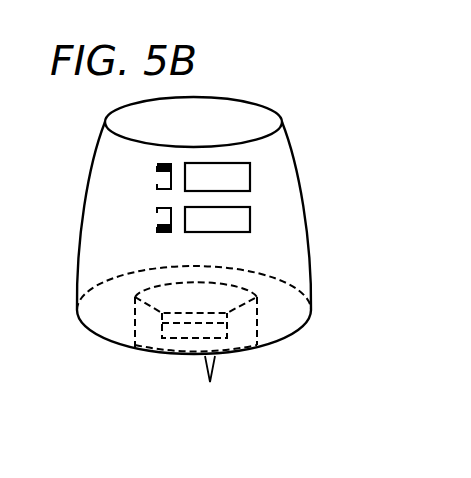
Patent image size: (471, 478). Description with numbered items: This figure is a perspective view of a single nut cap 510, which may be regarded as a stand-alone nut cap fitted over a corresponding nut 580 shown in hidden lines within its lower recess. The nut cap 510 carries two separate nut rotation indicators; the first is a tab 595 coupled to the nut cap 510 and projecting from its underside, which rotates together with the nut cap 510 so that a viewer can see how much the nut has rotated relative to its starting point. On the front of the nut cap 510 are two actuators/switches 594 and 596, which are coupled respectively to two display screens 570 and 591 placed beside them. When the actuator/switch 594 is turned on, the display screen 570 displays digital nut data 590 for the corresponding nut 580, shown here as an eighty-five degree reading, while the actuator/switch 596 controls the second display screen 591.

The nut cap 510 is at (266, 84).
The display screen 570 is at (250, 172).
The nut 580 is at (142, 312).
The digital nut data 590 is at (220, 180).
The display screen 591 is at (250, 217).
The actuator/switch 594 is at (157, 182).
The tab 595 is at (215, 367).
The actuator/switch 596 is at (157, 218).